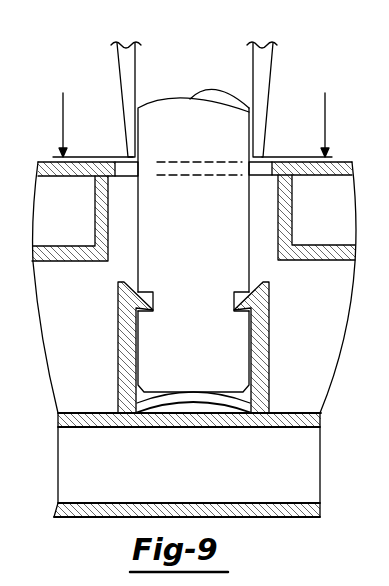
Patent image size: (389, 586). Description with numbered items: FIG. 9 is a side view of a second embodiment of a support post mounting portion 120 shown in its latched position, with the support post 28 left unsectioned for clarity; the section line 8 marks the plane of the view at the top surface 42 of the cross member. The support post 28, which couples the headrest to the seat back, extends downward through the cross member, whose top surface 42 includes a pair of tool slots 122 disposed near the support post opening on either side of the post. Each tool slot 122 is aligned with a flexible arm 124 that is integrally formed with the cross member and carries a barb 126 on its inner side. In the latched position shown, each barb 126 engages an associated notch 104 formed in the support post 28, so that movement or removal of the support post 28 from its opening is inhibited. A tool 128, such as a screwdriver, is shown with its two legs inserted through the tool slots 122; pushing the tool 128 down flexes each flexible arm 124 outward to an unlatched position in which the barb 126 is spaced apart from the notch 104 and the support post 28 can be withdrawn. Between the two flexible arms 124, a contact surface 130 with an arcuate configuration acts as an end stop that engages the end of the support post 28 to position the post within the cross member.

The section line 8- 8 is at (193, 113).
The support post 28 is at (205, 231).
The top surface 42 is at (50, 162).
The notch 104 is at (234, 312).
The support post mounting portion 120 is at (236, 91).
The tool slot 122 is at (124, 162).
The flexible arm 124 is at (118, 335).
The barb 126 is at (234, 292).
The tool 128 is at (253, 65).
The contact surface 130 is at (193, 395).